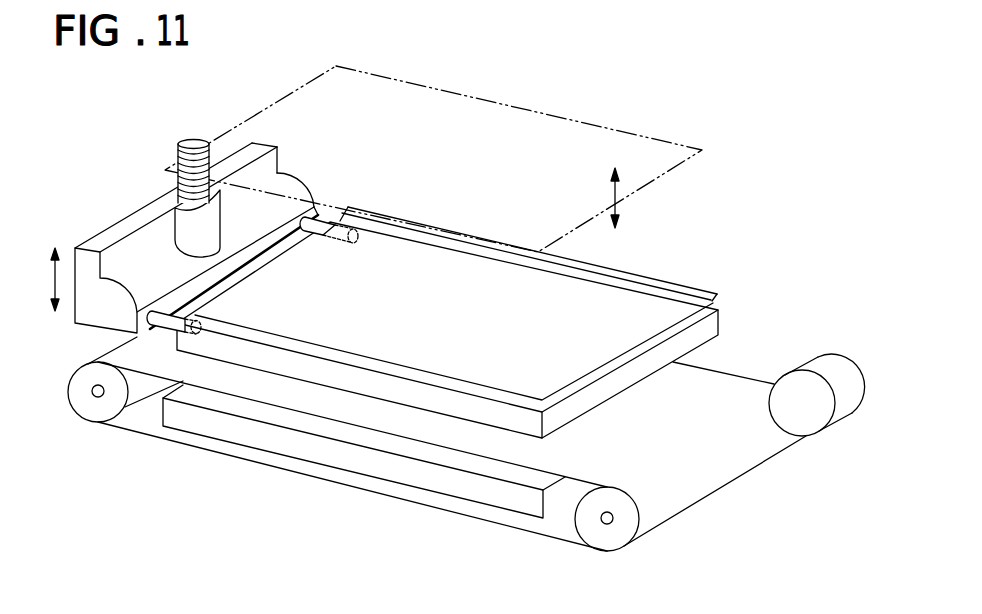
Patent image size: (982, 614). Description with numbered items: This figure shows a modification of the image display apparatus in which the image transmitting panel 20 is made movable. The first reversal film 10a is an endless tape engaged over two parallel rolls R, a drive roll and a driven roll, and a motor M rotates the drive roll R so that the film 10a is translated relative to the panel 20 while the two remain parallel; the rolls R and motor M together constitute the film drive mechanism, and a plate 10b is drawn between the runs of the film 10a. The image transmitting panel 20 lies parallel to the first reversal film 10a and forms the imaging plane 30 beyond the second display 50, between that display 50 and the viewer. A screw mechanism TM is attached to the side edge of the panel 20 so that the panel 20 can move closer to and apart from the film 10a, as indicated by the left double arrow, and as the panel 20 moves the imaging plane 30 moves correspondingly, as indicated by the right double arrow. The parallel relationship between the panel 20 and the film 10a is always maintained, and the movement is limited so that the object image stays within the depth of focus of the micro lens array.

The mechanism TM is at (124, 232).
The imaging plane 30 is at (663, 150).
The second display 50 is at (700, 292).
The image transmitting panel 20 is at (690, 340).
The motor M is at (830, 368).
The first reversal film 10a is at (714, 468).
The belt support plate 10b is at (304, 447).
The rolls R is at (100, 412).